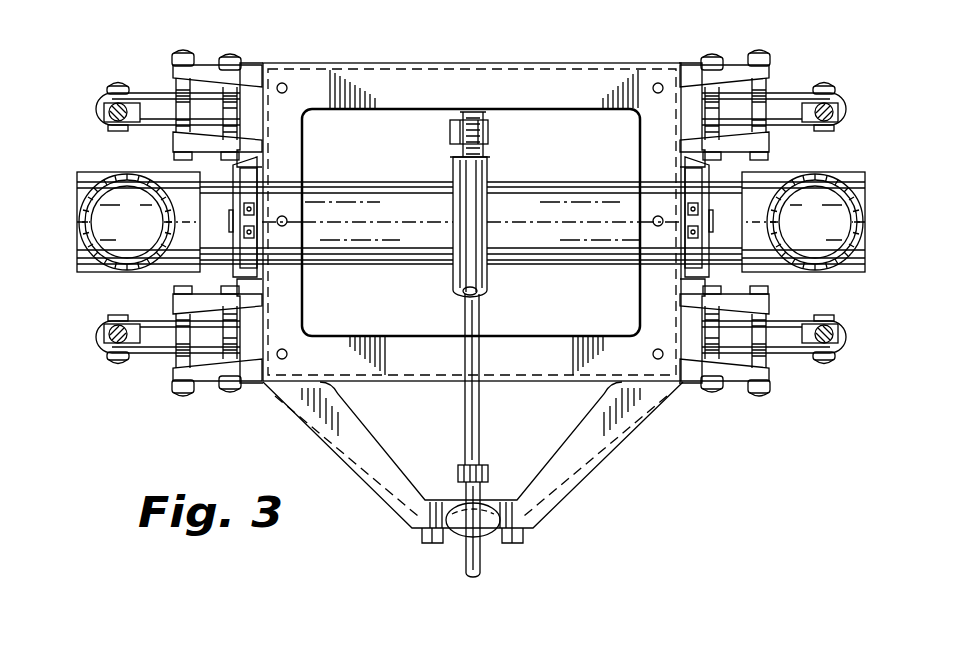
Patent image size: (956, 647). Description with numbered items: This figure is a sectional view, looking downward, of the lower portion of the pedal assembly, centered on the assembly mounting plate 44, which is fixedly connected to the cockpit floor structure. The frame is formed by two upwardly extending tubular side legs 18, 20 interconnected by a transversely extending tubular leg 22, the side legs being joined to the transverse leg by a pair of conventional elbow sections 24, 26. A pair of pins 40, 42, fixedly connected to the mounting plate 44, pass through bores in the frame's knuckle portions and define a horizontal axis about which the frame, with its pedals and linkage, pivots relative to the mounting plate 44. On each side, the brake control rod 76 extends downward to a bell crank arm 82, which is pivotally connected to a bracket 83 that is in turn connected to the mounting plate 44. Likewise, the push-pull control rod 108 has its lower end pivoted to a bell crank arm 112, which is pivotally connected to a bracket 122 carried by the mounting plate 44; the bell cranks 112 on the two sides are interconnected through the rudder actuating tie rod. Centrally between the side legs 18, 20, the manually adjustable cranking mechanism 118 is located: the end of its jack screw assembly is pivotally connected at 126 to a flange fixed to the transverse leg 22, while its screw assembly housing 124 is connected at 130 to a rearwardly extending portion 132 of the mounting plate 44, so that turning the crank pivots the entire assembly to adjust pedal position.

The tubular side leg 18 is at (808, 271).
The tubular side leg 20 is at (128, 271).
The transversely extending tubular leg 22 is at (355, 191).
The elbow section 24 is at (776, 188).
The elbow section 26 is at (173, 182).
The pin 40 is at (683, 222).
The pin 42 is at (257, 216).
The assembly mounting plate 44 is at (582, 78).
The brake control rod 76 is at (104, 352).
The bell crank arm 82 is at (158, 349).
The bracket 83 is at (210, 376).
The push-pull control rod 108 is at (105, 109).
The bell crank arm 112 is at (158, 104).
The manually adjustable cranking mechanism 118 is at (482, 562).
The bracket 122 is at (205, 64).
The screw assembly housing 124 is at (478, 494).
The pivotal connection 126 is at (488, 129).
The connection 130 is at (528, 533).
The rearwardly extending portion 132 is at (400, 489).